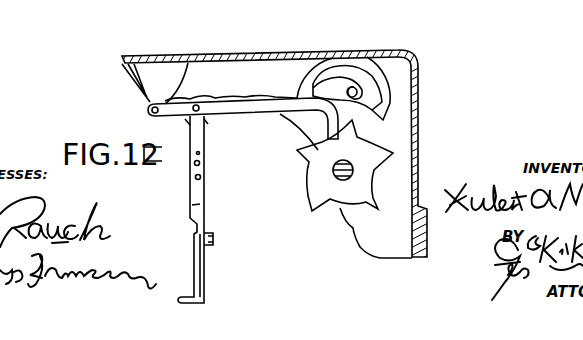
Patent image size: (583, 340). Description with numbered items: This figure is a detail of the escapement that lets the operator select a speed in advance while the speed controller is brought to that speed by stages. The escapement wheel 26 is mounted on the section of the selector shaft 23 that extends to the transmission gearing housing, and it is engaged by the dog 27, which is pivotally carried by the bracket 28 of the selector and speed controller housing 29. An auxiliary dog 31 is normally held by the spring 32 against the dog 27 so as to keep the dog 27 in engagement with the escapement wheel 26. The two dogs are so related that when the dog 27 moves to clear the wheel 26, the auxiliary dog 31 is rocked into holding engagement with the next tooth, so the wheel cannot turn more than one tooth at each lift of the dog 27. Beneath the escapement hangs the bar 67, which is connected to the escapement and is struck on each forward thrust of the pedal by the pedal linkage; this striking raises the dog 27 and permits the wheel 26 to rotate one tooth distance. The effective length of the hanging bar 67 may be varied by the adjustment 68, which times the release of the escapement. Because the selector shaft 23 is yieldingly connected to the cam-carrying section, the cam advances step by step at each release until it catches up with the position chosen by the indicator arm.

The selector shaft 23 is at (353, 165).
The escapement wheel 26 is at (385, 171).
The dog 27 is at (240, 116).
The bracket 28 is at (134, 88).
The selector and speed controller housing 29 is at (419, 63).
The auxiliary dog 31 is at (307, 87).
The spring 32 is at (340, 63).
The hanging bar 67 is at (192, 273).
The adjustment 68 is at (195, 177).